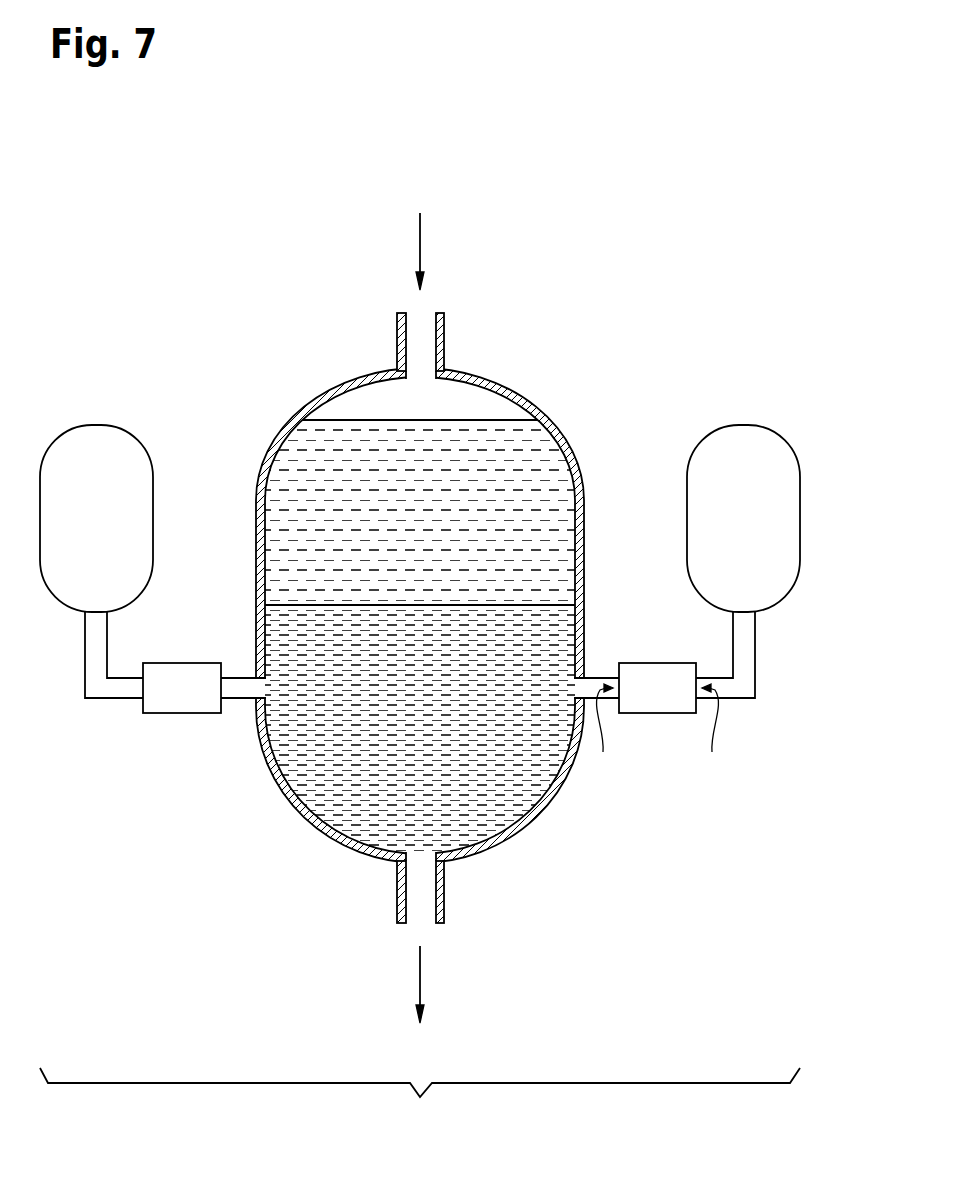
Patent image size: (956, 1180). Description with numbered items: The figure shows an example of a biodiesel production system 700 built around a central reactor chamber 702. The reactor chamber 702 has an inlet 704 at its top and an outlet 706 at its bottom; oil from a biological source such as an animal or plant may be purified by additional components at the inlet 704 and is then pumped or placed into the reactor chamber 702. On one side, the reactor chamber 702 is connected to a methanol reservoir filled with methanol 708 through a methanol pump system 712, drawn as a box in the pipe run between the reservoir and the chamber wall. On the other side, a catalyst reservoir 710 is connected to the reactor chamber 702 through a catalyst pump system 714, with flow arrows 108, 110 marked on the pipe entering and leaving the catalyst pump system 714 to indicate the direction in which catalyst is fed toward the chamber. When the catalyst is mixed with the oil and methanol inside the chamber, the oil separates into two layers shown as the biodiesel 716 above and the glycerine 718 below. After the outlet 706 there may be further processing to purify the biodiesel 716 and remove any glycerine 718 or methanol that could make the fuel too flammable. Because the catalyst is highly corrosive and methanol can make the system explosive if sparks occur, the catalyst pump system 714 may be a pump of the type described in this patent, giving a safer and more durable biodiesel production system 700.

The biodiesel production system 700 is at (420, 1100).
The reactor chamber 702 is at (497, 386).
The inlet 704 is at (420, 242).
The outlet 706 is at (420, 977).
The methanol reservoir 708 is at (94, 438).
The catalyst reservoir 710 is at (741, 438).
The methanol pump system 712 is at (181, 690).
The catalyst pump system 714 is at (654, 690).
The biodiesel 716 is at (313, 442).
The glycerine 718 is at (312, 796).
The aqueous phase feed 108 is at (714, 735).
The organic phase feed 110 is at (609, 735).